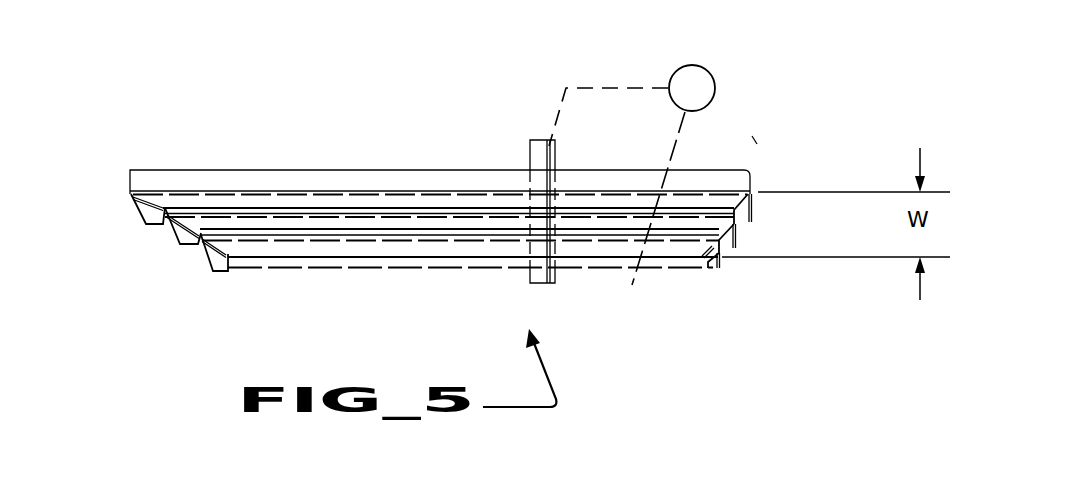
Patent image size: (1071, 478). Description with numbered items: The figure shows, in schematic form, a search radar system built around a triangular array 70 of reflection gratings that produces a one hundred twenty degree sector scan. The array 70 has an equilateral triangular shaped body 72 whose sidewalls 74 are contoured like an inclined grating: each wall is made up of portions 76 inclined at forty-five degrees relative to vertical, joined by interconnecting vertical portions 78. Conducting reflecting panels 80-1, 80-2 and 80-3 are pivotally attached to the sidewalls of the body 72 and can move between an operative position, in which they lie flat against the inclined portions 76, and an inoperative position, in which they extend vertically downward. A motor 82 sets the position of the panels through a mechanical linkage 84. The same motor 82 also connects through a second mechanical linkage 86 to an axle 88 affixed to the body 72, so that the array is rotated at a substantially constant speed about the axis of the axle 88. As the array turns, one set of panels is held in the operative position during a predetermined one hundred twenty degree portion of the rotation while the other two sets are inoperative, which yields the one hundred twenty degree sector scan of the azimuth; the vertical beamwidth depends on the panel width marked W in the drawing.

The triangular array 70 is at (447, 103).
The equilateral triangular shaped body 72 is at (250, 170).
The sidewalls 74 is at (336, 236).
The inclined portions 76 is at (150, 208).
The vertical portions 78 is at (204, 233).
The conducting reflecting panel 80-1 is at (328, 200).
The conducting reflecting panel 80-2 is at (410, 218).
The conducting reflecting panel 80-3 is at (598, 246).
The motor 82 is at (714, 90).
The mechanical linkage 84 is at (692, 140).
The mechanical linkage 86 is at (598, 86).
The axle 88 is at (543, 150).